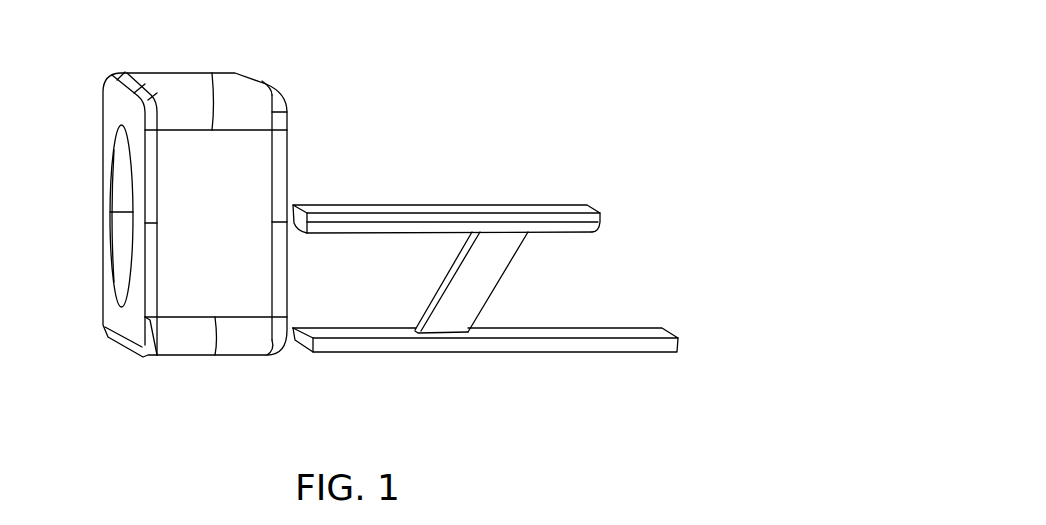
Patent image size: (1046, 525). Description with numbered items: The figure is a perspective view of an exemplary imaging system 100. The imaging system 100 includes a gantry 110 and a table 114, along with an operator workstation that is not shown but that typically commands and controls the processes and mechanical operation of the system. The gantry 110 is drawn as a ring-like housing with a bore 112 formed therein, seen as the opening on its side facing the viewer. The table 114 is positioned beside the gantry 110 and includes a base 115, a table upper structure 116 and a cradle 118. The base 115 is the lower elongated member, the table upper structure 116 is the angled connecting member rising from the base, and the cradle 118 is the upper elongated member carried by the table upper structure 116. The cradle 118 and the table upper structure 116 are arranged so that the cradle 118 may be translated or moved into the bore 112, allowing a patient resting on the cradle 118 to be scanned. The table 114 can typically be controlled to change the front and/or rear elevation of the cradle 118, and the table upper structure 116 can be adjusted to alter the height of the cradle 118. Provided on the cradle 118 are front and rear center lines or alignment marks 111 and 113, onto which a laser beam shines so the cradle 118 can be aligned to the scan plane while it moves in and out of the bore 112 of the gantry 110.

The imaging system 100 is at (595, 77).
The gantry 110 is at (173, 72).
The front alignment mark 111 is at (353, 206).
The bore 112 is at (103, 184).
The rear alignment mark 113 is at (556, 206).
The table 114 is at (468, 360).
The base 115 is at (641, 353).
The table upper structure 116 is at (571, 233).
The cradle 118 is at (428, 205).